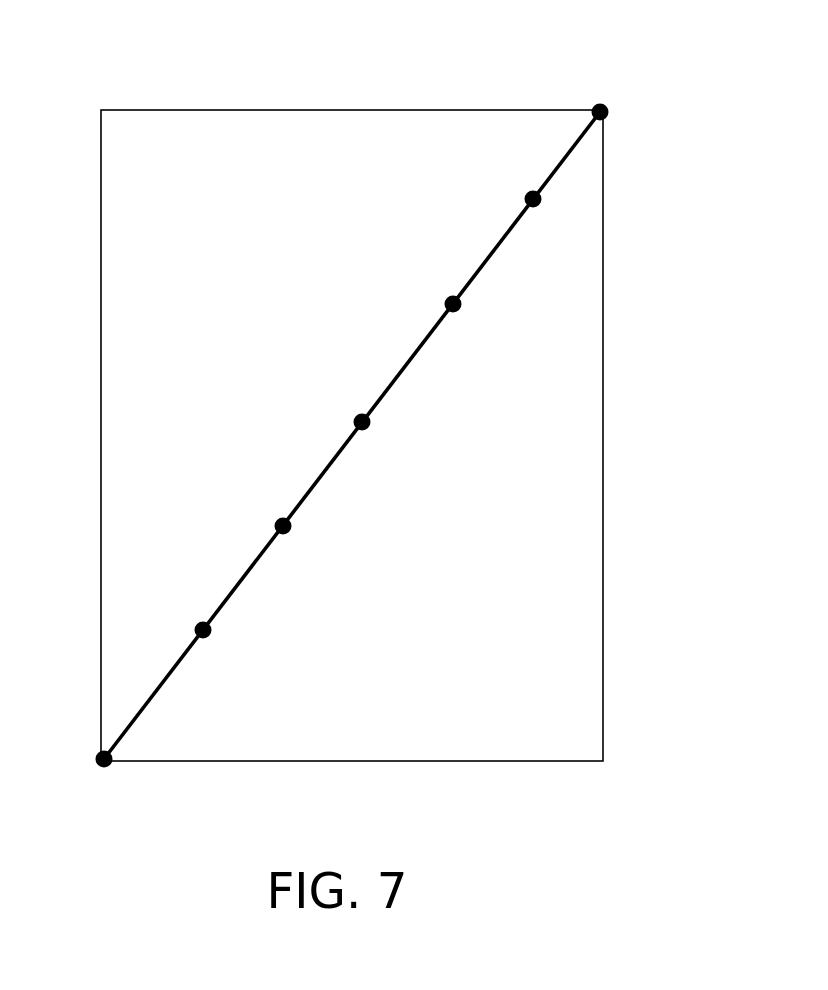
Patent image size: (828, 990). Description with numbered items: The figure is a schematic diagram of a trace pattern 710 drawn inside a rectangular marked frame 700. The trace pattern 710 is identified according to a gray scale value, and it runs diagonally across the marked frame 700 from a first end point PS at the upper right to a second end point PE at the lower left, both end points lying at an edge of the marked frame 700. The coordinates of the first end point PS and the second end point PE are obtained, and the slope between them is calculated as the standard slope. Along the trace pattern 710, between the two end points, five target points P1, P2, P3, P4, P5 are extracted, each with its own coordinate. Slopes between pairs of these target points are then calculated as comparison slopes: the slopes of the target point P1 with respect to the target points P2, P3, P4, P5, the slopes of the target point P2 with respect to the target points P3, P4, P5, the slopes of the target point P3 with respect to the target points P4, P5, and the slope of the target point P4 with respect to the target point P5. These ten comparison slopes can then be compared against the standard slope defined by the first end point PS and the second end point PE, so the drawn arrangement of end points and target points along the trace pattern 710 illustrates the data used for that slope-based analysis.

The marked frame 700 is at (352, 110).
The trace pattern 710 is at (495, 255).
The first end point PS is at (613, 95).
The second end point PE is at (89, 777).
The target point P1 is at (516, 190).
The target point P2 is at (436, 293).
The target point P3 is at (345, 412).
The target point P4 is at (267, 516).
The target point P5 is at (188, 618).